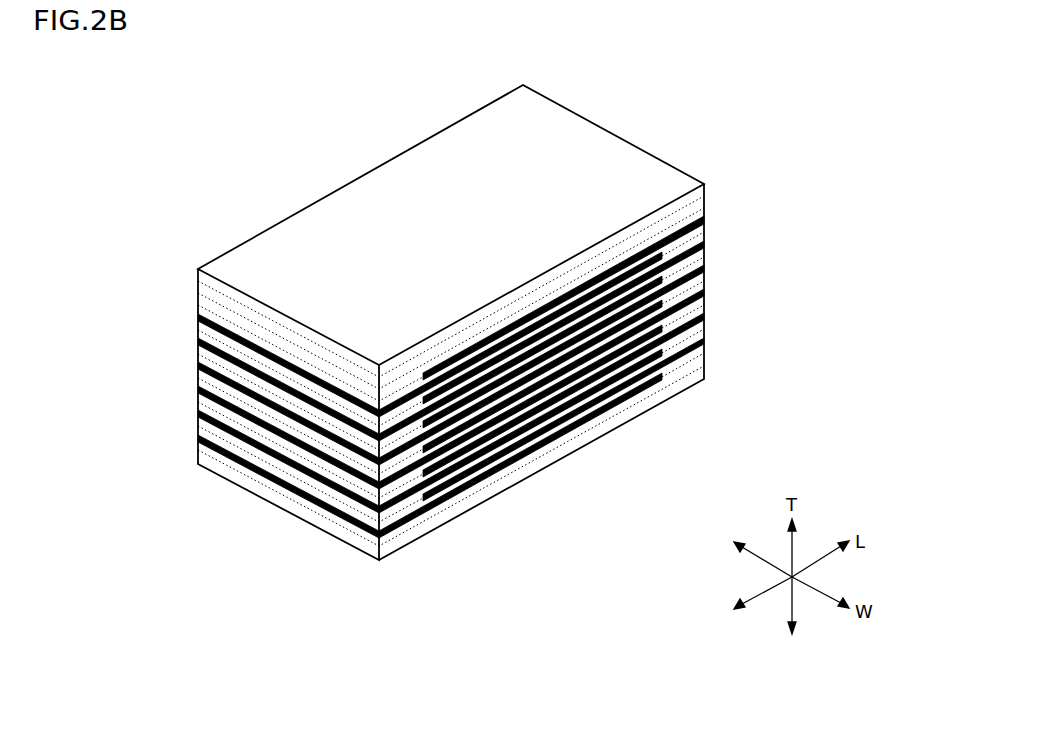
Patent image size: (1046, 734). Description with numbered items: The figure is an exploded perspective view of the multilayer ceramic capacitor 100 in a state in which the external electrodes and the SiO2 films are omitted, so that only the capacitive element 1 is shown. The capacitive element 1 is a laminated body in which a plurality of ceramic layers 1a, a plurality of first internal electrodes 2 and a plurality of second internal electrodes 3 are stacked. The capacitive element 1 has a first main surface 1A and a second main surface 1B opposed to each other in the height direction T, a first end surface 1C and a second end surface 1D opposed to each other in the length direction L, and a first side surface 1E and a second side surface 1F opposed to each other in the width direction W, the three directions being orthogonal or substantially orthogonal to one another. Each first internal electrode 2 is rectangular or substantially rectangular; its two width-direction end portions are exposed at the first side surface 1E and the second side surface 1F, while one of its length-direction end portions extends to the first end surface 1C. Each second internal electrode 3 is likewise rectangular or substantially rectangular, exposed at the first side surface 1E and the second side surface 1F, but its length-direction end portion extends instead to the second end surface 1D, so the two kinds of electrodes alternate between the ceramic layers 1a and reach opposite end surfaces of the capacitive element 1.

The multilayer ceramic capacitor 100 is at (104, 96).
The capacitive element 1 is at (250, 270).
The ceramic layer 1a is at (197, 270).
The first main surface 1A is at (546, 479).
The second main surface 1B is at (418, 222).
The first end surface 1C is at (272, 420).
The second end surface 1D is at (722, 272).
The first side surface 1E is at (349, 177).
The second side surface 1F is at (548, 372).
The first internal electrode 2 is at (345, 395).
The second internal electrode 3 is at (706, 220).